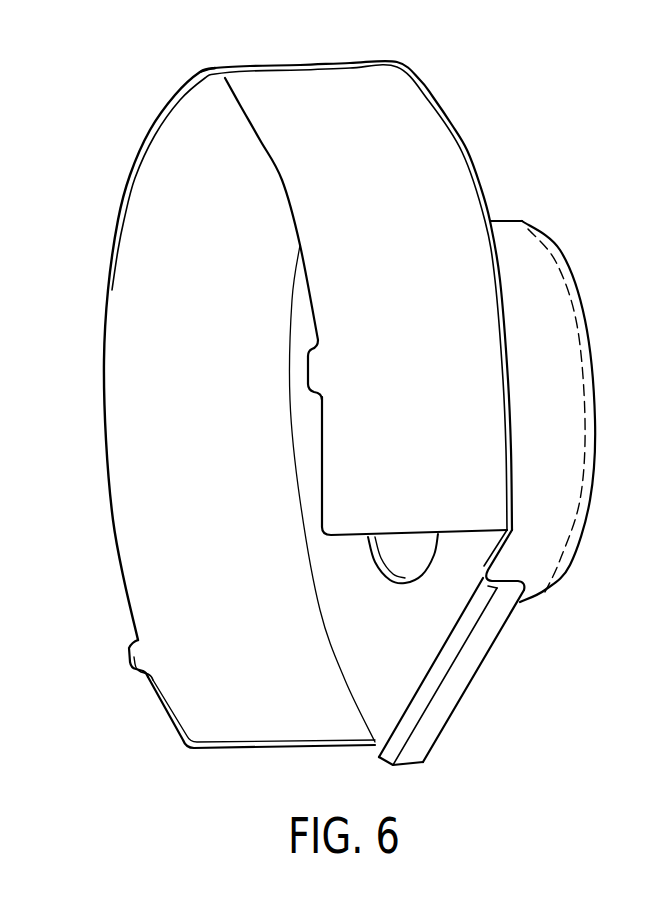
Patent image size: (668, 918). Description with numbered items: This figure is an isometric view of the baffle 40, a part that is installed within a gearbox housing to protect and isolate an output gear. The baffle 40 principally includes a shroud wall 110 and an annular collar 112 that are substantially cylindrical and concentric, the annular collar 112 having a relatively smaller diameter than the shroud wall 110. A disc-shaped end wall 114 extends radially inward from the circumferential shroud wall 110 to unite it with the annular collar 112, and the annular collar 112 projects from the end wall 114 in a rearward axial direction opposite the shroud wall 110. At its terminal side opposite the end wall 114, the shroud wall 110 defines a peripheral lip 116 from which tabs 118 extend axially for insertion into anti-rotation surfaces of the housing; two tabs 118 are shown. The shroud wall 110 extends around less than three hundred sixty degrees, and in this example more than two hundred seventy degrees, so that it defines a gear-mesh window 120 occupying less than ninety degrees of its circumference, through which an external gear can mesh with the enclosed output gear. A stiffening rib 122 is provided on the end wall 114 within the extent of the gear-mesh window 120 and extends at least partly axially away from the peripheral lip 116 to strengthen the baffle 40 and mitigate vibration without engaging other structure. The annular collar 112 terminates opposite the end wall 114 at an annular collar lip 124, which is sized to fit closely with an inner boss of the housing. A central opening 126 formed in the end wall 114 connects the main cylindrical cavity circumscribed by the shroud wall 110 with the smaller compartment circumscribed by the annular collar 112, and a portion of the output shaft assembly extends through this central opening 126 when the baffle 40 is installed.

The baffle 40 is at (486, 45).
The shroud wall 110 is at (296, 65).
The annular collar 112 is at (507, 220).
The end wall 114 is at (415, 645).
The peripheral lip 116 is at (115, 550).
The tab 118 is at (308, 372).
The gear-mesh window 120 is at (288, 753).
The stiffening rib 122 is at (447, 697).
The annular collar lip 124 is at (583, 357).
The central opening 126 is at (388, 557).